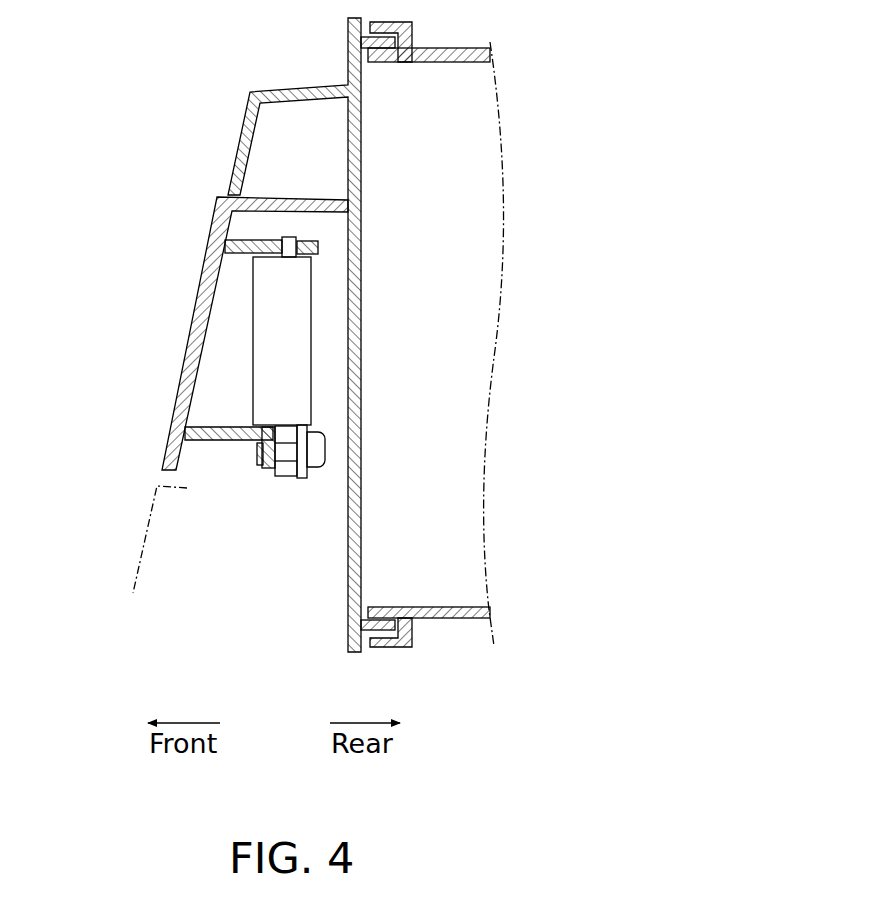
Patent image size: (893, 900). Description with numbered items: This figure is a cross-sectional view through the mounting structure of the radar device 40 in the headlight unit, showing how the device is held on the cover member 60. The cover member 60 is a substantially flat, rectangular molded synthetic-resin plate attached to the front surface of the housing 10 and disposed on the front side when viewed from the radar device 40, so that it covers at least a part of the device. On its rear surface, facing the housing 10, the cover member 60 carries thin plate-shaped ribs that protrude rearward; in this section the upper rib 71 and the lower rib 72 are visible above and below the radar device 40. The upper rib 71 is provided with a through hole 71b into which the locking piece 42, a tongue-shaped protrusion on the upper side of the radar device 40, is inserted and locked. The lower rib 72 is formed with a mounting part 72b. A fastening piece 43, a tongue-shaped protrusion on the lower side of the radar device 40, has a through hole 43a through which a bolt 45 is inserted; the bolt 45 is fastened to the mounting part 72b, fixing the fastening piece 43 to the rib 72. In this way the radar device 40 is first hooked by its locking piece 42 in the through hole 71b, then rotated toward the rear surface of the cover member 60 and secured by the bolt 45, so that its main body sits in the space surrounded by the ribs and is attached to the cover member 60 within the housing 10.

The housing 10 is at (363, 293).
The radar device 40 is at (293, 336).
The locking piece 42 is at (289, 237).
The fastening piece 43 is at (288, 472).
The through hole 43a is at (300, 450).
The bolt 45 is at (327, 453).
The cover member 60 is at (190, 315).
The upper rib 71 is at (264, 240).
The through hole 71b is at (305, 240).
The lower rib 72 is at (230, 440).
The mounting part 72b is at (265, 467).